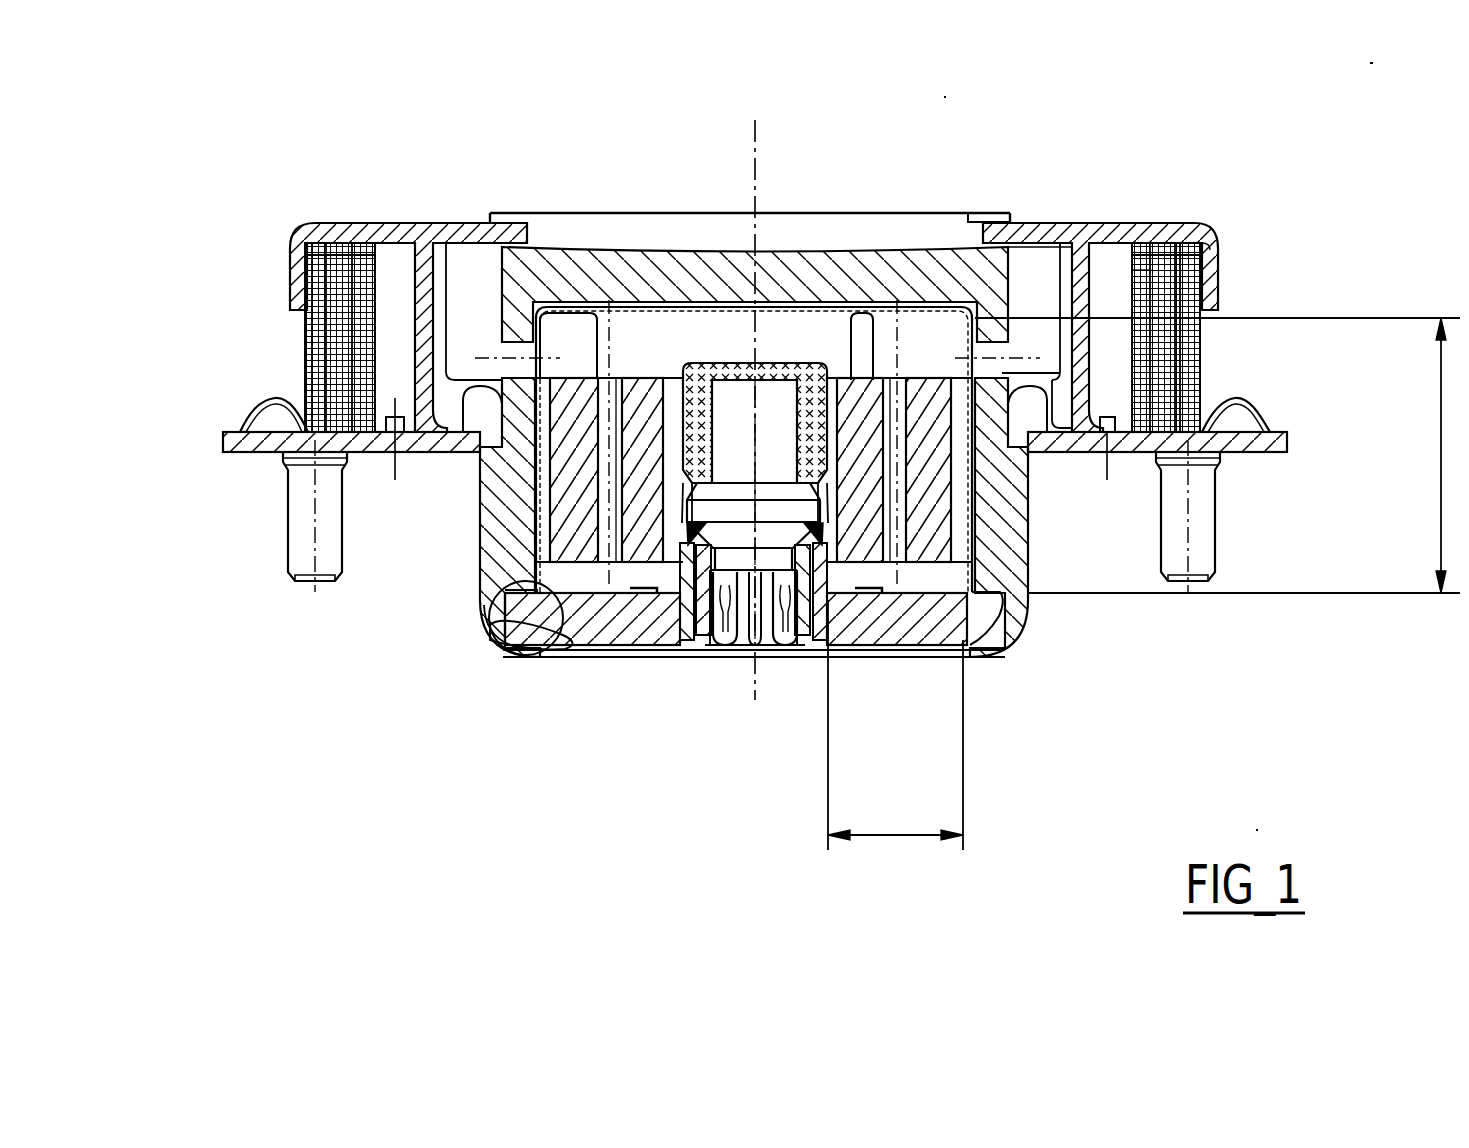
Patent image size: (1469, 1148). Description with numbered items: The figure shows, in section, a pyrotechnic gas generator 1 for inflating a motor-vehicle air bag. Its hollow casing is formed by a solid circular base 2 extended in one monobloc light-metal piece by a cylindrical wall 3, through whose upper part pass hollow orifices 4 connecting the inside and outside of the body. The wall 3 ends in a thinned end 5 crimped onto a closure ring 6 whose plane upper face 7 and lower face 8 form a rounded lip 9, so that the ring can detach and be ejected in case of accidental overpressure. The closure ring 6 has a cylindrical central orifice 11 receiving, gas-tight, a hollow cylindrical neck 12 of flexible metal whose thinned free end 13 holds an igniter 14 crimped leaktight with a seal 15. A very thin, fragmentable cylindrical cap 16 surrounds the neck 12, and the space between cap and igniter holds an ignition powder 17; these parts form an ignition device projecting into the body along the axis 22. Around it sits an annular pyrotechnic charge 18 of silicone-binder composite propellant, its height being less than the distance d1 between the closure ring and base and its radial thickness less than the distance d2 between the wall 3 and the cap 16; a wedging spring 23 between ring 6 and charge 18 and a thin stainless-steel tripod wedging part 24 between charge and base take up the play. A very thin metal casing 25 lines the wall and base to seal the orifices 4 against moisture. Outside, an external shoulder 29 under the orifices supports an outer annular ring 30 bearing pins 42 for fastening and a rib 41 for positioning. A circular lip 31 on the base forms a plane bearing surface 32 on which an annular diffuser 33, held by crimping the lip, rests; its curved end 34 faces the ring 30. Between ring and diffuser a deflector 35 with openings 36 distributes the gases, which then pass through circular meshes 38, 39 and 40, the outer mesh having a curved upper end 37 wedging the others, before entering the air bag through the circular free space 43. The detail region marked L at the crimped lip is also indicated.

The pyrotechnic gas generator 1 is at (262, 662).
The circular base 2 is at (590, 278).
The cylindrical wall 3 is at (485, 513).
The orifices 4 is at (503, 357).
The thinned end 5 is at (524, 642).
The closure ring 6 is at (628, 625).
The plane upper face 7 is at (560, 593).
The lower face 8 is at (650, 658).
The rounded lip 9 is at (522, 645).
The cylindrical central orifice 11 is at (690, 645).
The hollow cylindrical neck 12 is at (801, 605).
The thinned free end 13 is at (680, 510).
The igniter 14 is at (790, 525).
The seal 15 is at (680, 532).
The cylindrical cap 16 is at (698, 352).
The ignition powder 17 is at (716, 422).
The pyrotechnic charge 18 is at (500, 572).
The axis of the generator 22 is at (760, 141).
The wedging spring 23 is at (885, 578).
The wedging part 24 is at (878, 340).
The thin metal casing 25 is at (1000, 540).
The external shoulder 29 is at (473, 460).
The outer annular ring 30 is at (1060, 442).
The circular lip 31 is at (1012, 213).
The plane bearing surface 32 is at (988, 245).
The annular diffuser 33 is at (1082, 240).
The curved end 34 is at (1215, 278).
The deflector 35 is at (1100, 290).
The openings 36 is at (470, 243).
The curved upper end 37 is at (1207, 240).
The circular mesh 38 is at (1142, 280).
The circular mesh 39 is at (1107, 428).
The outer mesh 40 is at (1213, 345).
The rib 41 is at (1240, 415).
The pins 42 is at (295, 522).
The circular free space 43 is at (292, 352).
The detail circle L is at (496, 618).
The distance d1 is at (1217, 455).
The radial distance d2 is at (895, 725).